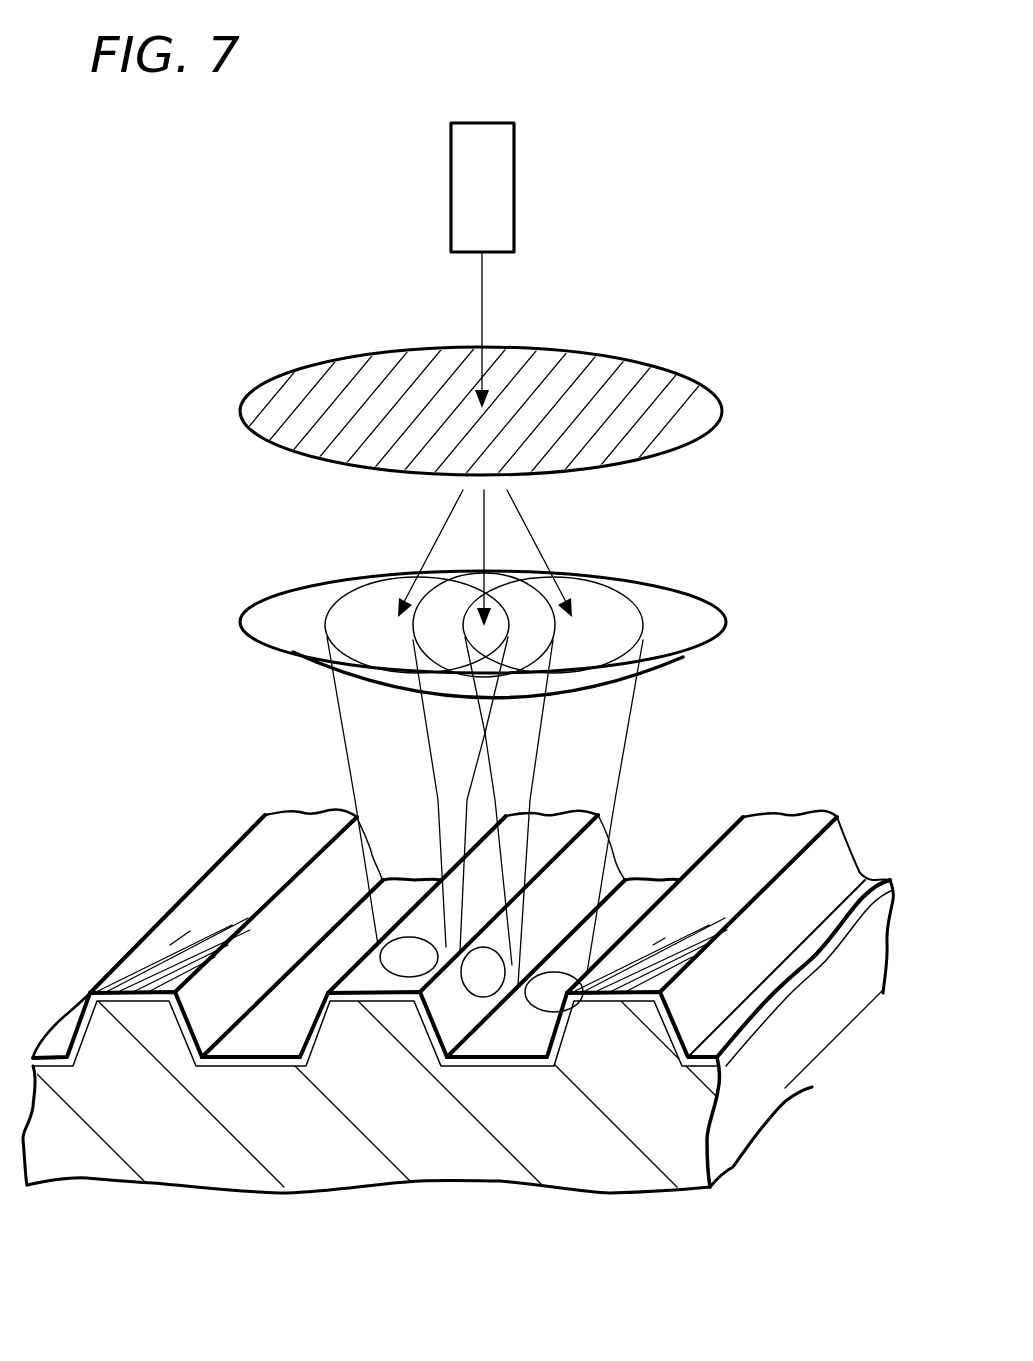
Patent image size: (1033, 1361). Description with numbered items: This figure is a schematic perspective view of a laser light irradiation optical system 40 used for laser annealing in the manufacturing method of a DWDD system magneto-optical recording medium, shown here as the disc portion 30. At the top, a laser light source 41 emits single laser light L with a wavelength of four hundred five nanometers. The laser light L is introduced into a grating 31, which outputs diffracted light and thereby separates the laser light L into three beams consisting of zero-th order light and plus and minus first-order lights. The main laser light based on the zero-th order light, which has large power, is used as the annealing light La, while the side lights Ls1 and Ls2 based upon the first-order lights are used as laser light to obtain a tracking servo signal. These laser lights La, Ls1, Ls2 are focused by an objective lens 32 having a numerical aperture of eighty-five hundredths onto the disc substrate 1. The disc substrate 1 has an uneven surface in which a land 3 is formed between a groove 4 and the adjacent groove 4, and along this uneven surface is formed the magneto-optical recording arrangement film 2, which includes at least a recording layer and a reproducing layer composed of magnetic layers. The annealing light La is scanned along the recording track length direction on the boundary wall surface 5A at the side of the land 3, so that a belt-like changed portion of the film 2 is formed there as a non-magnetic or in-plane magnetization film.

The laser light irradiation optical system 40 is at (470, 410).
The laser light source 41 is at (515, 166).
The laser light L is at (483, 288).
The grating 31 is at (658, 363).
The objective lens 32 is at (670, 602).
The side light Ls1 is at (340, 718).
The side light Ls2 is at (628, 723).
The annealing light La is at (540, 747).
The optical disc 30 is at (446, 1023).
The disc substrate 1 is at (613, 1153).
The magneto-optical recording arrangement film 2 is at (127, 997).
The land 3 is at (555, 835).
The groove 4 is at (647, 885).
The boundary wall surface 5A is at (300, 1058).